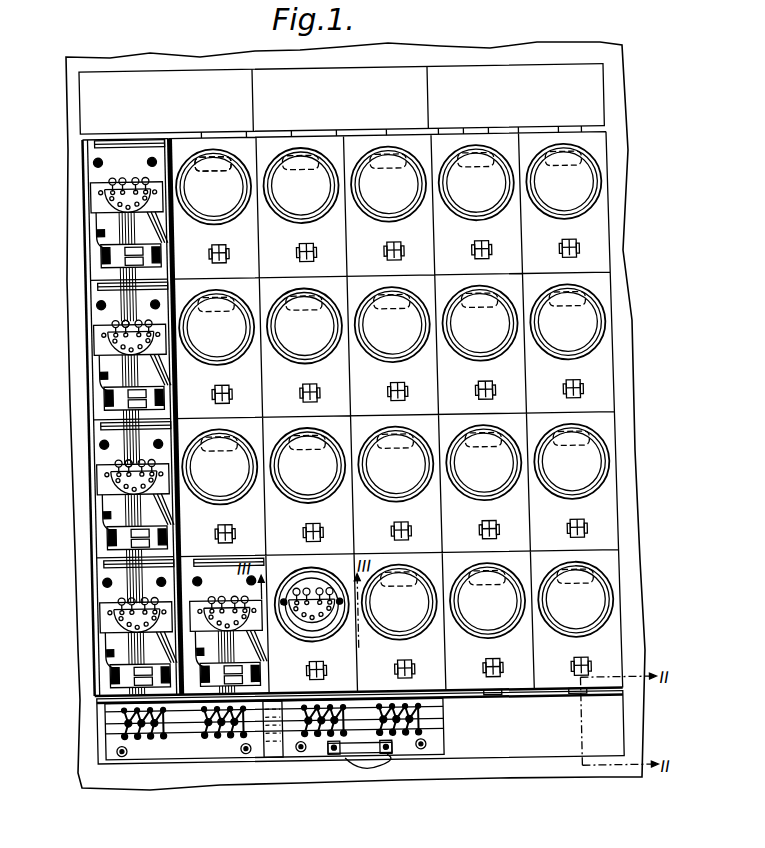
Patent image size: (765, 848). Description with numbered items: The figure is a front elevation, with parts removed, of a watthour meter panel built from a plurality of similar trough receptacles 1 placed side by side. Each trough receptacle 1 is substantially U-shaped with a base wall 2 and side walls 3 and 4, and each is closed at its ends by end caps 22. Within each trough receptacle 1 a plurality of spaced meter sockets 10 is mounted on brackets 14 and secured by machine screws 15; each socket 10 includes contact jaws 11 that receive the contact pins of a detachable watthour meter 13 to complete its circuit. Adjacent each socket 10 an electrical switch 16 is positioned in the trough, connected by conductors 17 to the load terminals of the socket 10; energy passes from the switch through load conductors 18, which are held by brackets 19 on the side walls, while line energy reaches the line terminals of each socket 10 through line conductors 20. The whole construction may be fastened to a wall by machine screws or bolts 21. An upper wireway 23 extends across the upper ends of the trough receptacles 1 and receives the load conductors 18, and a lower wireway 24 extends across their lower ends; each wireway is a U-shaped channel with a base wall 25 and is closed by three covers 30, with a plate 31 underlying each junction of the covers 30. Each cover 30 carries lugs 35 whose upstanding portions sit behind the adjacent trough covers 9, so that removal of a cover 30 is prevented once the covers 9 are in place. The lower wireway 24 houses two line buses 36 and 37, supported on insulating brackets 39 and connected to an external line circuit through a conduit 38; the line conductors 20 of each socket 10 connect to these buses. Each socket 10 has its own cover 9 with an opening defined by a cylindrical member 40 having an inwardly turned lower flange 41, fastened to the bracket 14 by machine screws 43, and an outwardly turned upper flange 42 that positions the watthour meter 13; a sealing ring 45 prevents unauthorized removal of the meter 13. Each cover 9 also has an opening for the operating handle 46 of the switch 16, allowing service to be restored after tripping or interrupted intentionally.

The trough receptacle 1 is at (86, 192).
The base wall 2 is at (104, 452).
The side wall 3 is at (84, 443).
The side wall 4 is at (166, 284).
The cover 9 is at (587, 232).
The meter socket 10 is at (128, 182).
The contact jaw 11 is at (108, 216).
The watthour meter 13 is at (236, 161).
The bracket 14 is at (95, 337).
The machine screw 15 is at (138, 311).
The electrical switch 16 is at (96, 417).
The conductor 17 is at (150, 230).
The load conductor 18 is at (88, 233).
The bracket 19 is at (90, 251).
The line conductor 20 is at (118, 293).
The machine screw or bolt 21 is at (90, 165).
The end cap 22 is at (90, 147).
The upper wireway 23 is at (590, 90).
The lower wireway 24 is at (83, 755).
The base wall 25 is at (200, 757).
The cover 30 is at (390, 85).
The plate 31 is at (250, 759).
The lug 35 is at (478, 701).
The line bus 36 is at (190, 741).
The line bus 37 is at (410, 727).
The conduit 38 is at (366, 765).
The insulating bracket 39 is at (126, 713).
The cylindrical member 40 is at (299, 576).
The lower flange 41 is at (277, 580).
The upper flange 42 is at (282, 631).
The machine screw 43 is at (270, 603).
The sealing ring 45 is at (208, 162).
The operating handle 46 is at (233, 252).